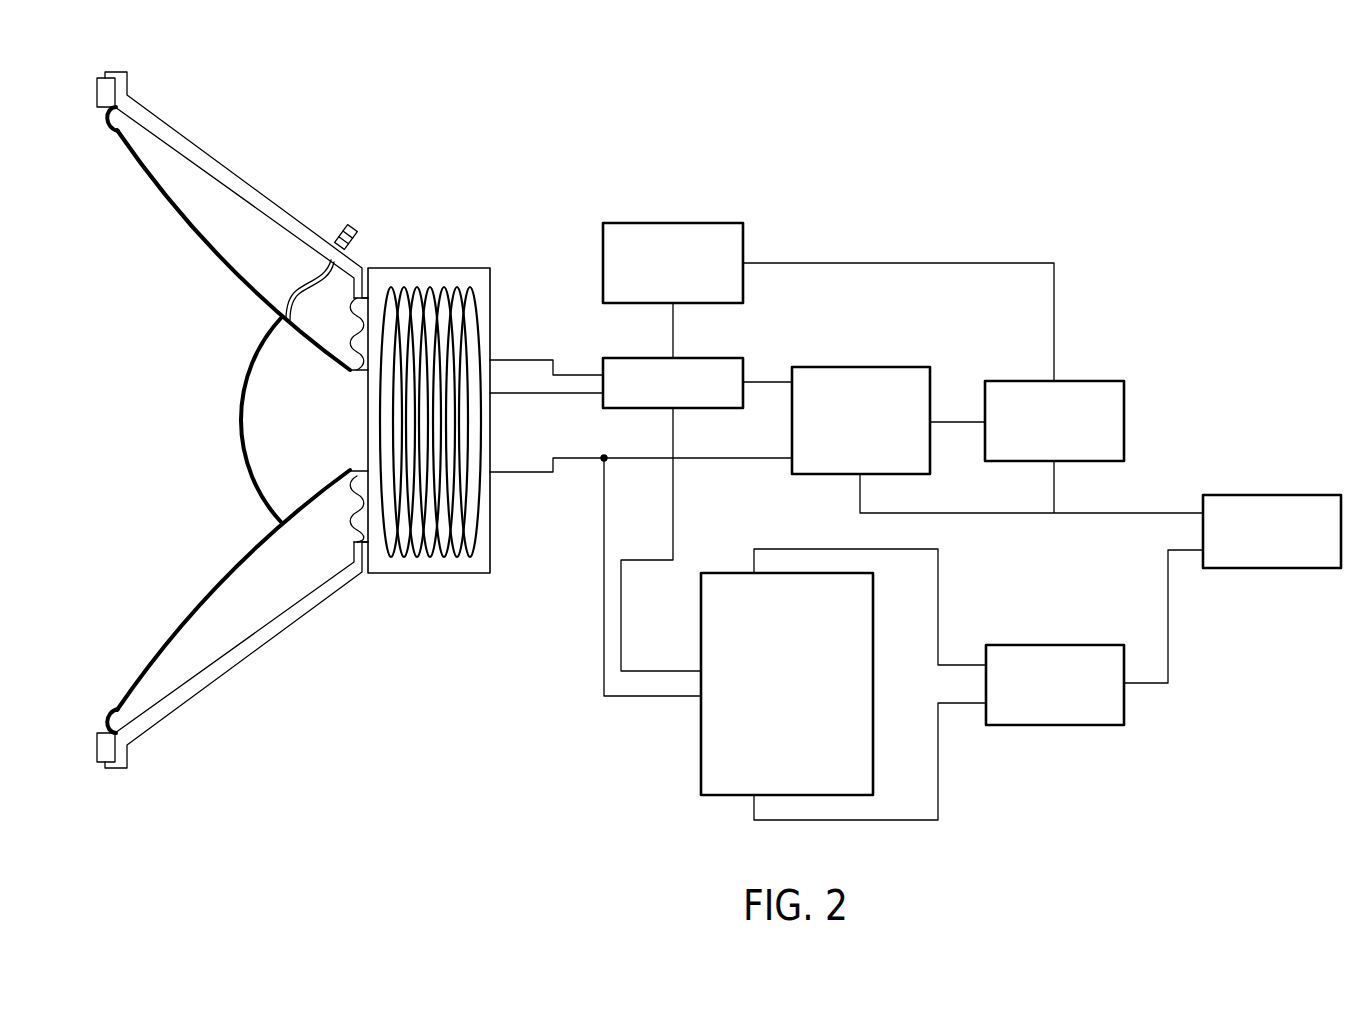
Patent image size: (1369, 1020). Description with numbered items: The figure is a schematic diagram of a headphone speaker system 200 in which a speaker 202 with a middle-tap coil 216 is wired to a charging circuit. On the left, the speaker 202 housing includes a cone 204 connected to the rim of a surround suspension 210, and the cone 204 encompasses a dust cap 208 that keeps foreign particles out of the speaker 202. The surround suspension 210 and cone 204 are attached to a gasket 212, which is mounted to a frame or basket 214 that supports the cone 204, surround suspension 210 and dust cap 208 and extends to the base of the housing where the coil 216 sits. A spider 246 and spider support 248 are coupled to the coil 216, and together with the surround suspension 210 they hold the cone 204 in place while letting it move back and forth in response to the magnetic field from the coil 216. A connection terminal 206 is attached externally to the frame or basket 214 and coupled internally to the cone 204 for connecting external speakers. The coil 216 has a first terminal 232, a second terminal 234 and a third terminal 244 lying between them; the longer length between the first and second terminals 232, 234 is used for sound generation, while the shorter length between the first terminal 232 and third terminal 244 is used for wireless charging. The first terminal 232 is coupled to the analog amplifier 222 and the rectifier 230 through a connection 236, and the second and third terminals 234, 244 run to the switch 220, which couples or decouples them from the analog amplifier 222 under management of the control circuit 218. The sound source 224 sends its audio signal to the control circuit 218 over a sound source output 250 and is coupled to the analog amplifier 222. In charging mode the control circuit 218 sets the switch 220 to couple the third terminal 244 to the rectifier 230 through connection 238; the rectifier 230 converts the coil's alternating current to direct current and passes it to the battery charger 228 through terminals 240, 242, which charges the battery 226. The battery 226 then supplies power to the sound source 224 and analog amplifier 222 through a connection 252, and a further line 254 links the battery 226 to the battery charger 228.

The headphone speaker system 200 is at (1113, 123).
The speaker 202 is at (240, 124).
The cone 204 is at (170, 211).
The connection terminal 206 is at (358, 228).
The dust cap 208 is at (242, 395).
The surround suspension 210 is at (108, 118).
The gasket 212 is at (97, 747).
The frame or basket 214 is at (193, 702).
The coil 216 is at (440, 266).
The control circuit 218 is at (699, 223).
The switch 220 is at (707, 358).
The analog amplifier 222 is at (878, 367).
The sound source 224 is at (1092, 381).
The battery 226 is at (1277, 568).
The battery charger 228 is at (1068, 725).
The rectifier 230 is at (701, 738).
The first terminal 232 is at (528, 476).
The second terminal 234 is at (522, 357).
The connection 236 is at (640, 697).
The connection 238 is at (673, 497).
The terminal 240 is at (938, 775).
The terminal 242 is at (938, 577).
The third terminal 244 is at (513, 396).
The spider 246 is at (351, 526).
The spider support 248 is at (365, 480).
The sound source output 250 is at (899, 263).
The connection 252 is at (1112, 513).
The wire 254 is at (1168, 625).